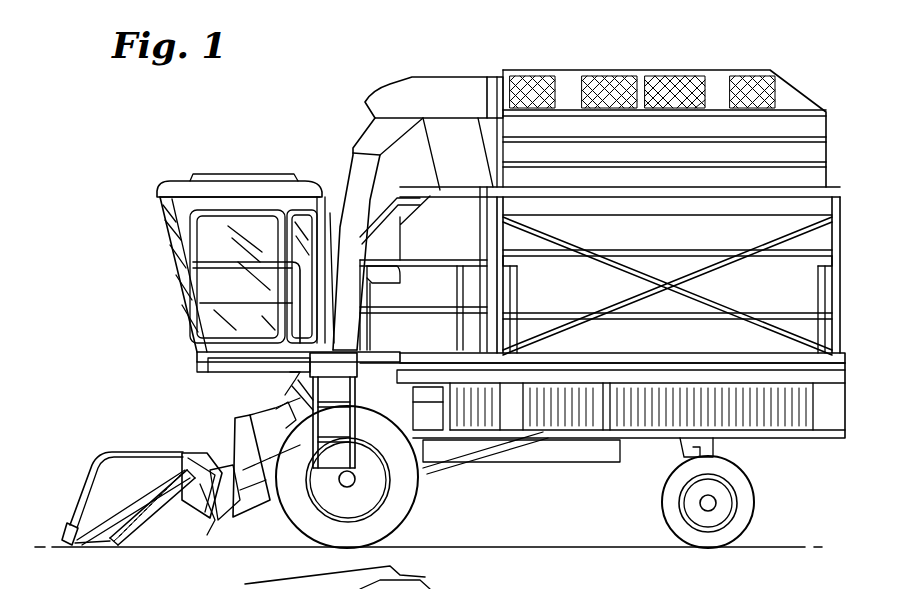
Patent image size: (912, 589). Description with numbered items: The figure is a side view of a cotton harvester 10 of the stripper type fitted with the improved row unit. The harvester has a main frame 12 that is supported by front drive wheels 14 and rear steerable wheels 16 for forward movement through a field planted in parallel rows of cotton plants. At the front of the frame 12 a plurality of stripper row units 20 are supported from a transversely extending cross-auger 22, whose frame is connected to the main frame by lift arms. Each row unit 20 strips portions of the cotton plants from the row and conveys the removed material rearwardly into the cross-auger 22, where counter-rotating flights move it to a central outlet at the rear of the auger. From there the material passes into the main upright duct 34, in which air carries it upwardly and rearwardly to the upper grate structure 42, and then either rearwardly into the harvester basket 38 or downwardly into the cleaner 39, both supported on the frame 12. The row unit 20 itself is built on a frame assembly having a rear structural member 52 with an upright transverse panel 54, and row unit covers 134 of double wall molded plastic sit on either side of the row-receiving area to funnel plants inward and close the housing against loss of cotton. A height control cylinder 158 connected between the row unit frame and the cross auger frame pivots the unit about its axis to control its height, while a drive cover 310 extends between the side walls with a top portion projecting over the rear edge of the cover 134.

The cotton harvester 10 is at (320, 118).
The main frame 12 is at (832, 363).
The front drive wheels 14 is at (420, 497).
The rear steerable wheels 16 is at (756, 502).
The stripper row units 20 is at (88, 478).
The cross-auger 22 is at (224, 497).
The main upright duct 34 is at (343, 188).
The harvester basket 38 is at (832, 128).
The cleaner 39 is at (398, 197).
The upper grate structure 42 is at (456, 80).
The rear structural member 52 is at (208, 465).
The upright transverse panel 54 is at (400, 575).
The row unit covers 134 is at (121, 440).
The height control cylinder 158 is at (195, 510).
The drive cover 310 is at (243, 570).